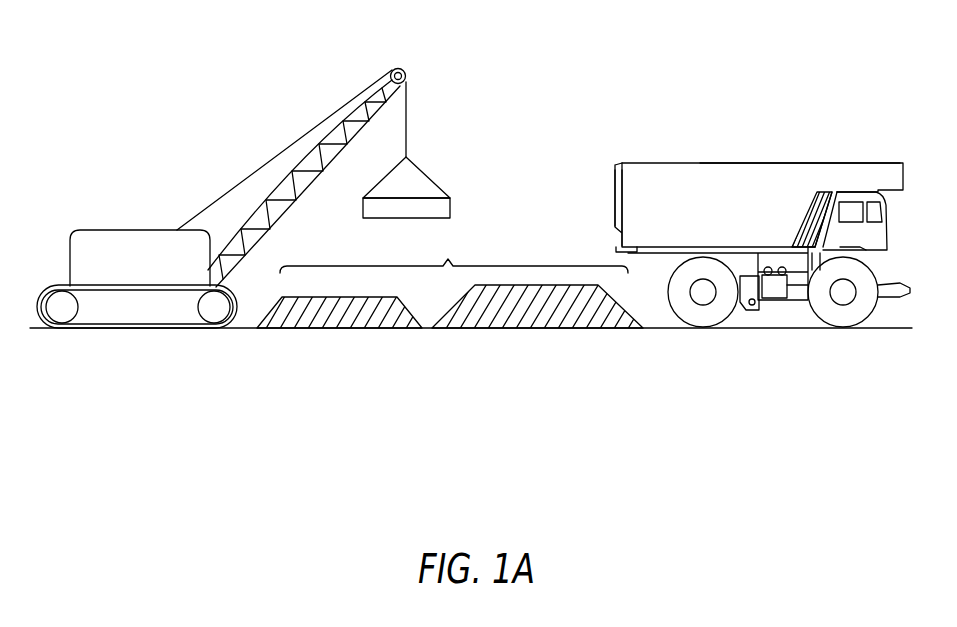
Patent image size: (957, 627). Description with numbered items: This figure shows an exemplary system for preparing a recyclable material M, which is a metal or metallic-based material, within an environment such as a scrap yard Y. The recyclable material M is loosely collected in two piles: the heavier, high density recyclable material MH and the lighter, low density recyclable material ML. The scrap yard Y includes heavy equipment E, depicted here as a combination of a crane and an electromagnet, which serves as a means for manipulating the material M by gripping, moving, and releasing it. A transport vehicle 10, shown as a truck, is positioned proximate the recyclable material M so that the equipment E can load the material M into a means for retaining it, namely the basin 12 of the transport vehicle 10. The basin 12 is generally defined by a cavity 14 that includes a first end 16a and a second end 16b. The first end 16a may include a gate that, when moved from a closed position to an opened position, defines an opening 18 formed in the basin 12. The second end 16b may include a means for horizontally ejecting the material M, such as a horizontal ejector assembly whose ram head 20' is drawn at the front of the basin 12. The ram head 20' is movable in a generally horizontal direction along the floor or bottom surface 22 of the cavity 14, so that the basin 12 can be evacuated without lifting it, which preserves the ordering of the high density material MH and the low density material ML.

The transport vehicle 10 is at (738, 205).
The basin 12 is at (735, 171).
The cavity 14 is at (773, 172).
The first end 16a is at (607, 140).
The second end 16b is at (834, 139).
The opening 18 is at (614, 178).
The ram head 20' is at (860, 188).
The bottom surface 22 is at (706, 249).
The heavy equipment E is at (167, 151).
The scrap yard Y is at (533, 123).
The recyclable material M is at (454, 254).
The high density recyclable material MH is at (313, 322).
The low density recyclable material ML is at (518, 321).